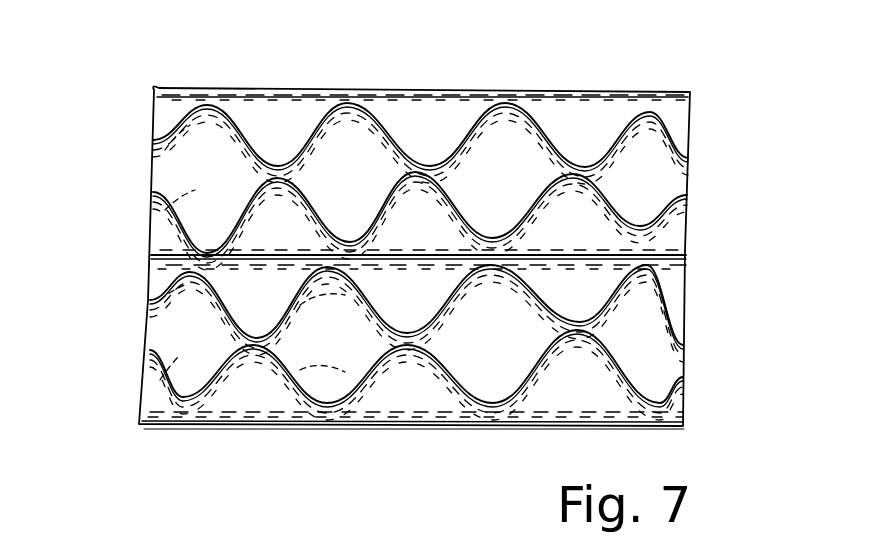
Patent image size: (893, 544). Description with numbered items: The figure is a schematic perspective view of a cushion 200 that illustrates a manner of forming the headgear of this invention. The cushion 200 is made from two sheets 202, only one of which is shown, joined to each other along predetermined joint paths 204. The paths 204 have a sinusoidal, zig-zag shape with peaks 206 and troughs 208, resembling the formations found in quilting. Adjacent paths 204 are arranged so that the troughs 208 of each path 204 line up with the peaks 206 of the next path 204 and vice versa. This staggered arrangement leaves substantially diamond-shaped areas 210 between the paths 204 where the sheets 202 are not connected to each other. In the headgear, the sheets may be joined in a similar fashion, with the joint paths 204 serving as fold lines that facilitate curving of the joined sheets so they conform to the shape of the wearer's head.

The cushion 200 is at (708, 248).
The sheets 202 is at (139, 420).
The paths 204 is at (154, 118).
The peaks 206 is at (200, 106).
The troughs 208 is at (288, 167).
The diamond-shaped areas 210 is at (175, 162).